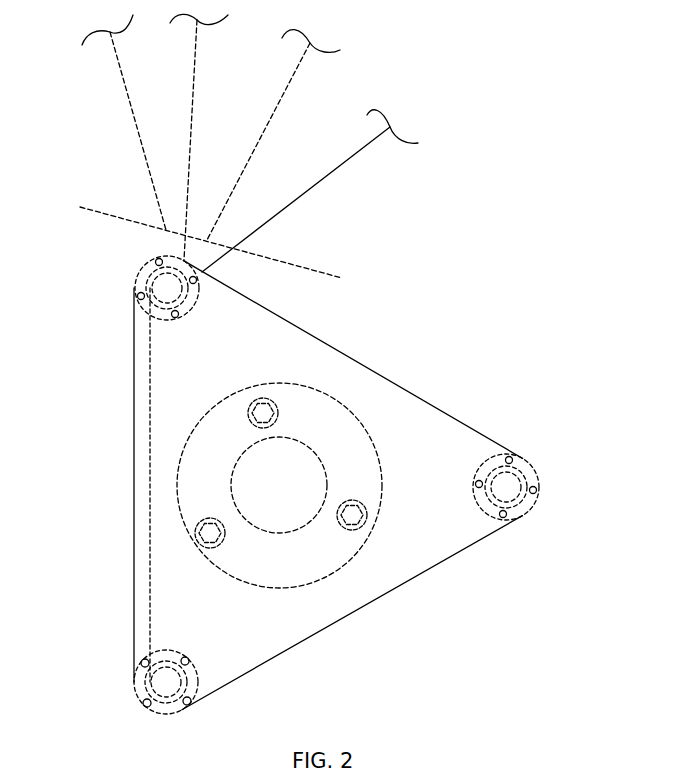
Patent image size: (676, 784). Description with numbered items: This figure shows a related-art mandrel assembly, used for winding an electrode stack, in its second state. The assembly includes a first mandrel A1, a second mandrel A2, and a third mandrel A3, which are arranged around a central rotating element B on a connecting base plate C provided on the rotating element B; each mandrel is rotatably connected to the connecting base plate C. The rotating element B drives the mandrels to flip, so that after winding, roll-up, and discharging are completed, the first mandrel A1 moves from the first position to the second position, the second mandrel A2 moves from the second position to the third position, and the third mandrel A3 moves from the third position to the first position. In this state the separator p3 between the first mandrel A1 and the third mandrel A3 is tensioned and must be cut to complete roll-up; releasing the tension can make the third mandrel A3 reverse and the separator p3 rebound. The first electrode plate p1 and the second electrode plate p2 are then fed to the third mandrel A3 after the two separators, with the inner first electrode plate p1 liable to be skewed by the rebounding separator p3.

The first electrode plate p1 is at (125, 90).
The second electrode plate p2 is at (288, 87).
The separator p3 is at (195, 75).
The first mandrel A1 is at (157, 680).
The second mandrel A2 is at (518, 485).
The third mandrel A3 is at (155, 287).
The rotating element B is at (283, 520).
The connecting base plate C is at (377, 380).